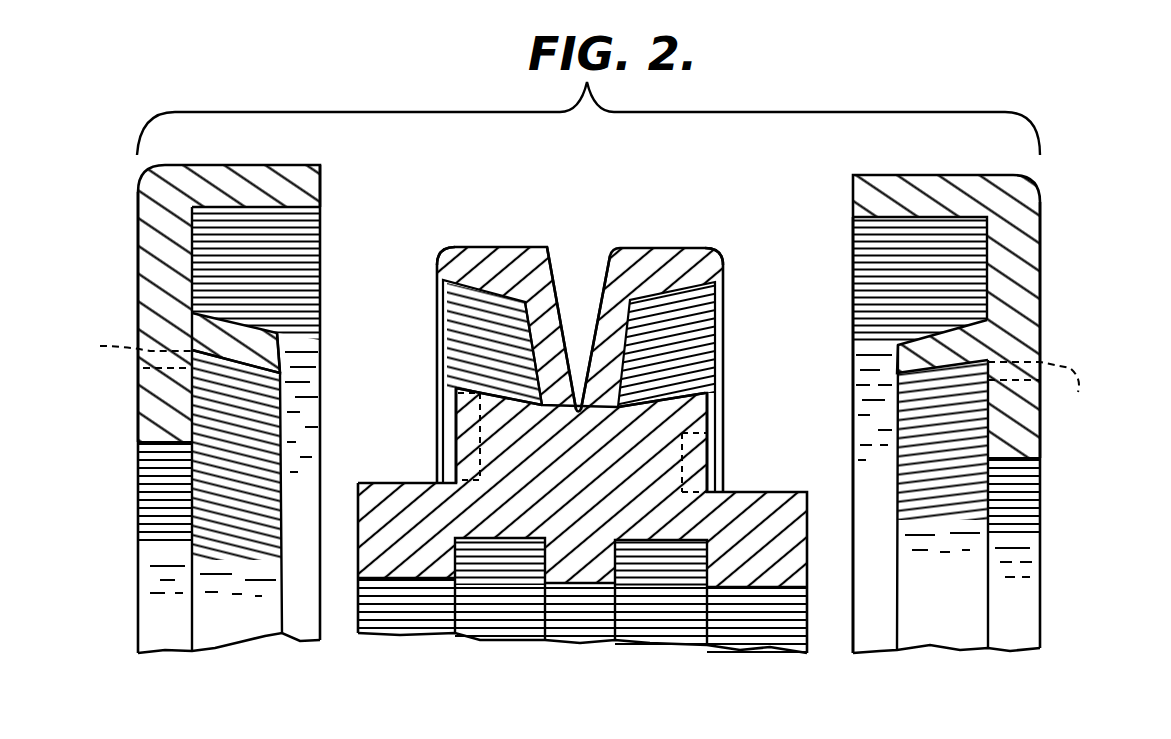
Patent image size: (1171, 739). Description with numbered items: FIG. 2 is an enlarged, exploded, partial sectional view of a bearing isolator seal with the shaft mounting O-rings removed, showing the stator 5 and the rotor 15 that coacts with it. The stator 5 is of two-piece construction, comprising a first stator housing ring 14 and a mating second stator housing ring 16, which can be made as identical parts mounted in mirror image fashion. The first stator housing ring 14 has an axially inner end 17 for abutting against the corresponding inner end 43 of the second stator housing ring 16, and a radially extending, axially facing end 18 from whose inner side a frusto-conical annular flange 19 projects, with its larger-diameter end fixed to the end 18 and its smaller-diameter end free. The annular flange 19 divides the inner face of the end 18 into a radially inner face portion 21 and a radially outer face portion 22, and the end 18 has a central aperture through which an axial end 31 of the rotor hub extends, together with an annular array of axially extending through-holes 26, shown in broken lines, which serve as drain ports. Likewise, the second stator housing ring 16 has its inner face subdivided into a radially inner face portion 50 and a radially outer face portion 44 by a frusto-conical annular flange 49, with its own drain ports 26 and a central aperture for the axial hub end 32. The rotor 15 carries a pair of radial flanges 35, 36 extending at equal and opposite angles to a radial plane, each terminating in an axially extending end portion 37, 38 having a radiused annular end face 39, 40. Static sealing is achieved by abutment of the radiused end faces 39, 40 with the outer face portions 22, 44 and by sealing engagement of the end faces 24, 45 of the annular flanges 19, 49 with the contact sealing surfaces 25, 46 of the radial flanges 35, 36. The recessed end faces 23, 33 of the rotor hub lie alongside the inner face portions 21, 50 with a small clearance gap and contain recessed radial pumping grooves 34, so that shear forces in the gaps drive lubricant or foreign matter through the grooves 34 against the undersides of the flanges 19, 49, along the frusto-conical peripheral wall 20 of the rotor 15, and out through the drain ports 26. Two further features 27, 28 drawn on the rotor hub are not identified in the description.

The stator 5 is at (104, 193).
The first stator housing ring 14 is at (160, 190).
The rotor 15 is at (630, 449).
The second stator housing ring 16 is at (1013, 238).
The axially inner end 17 is at (325, 178).
The radially extending, axially facing end 18 is at (136, 237).
The annular flange 19 is at (228, 320).
The frusto-conical peripheral wall 20 is at (478, 383).
The radially inner face portion 21 is at (214, 424).
The radially outer face portion 22 is at (217, 278).
The recessed end face 23 is at (462, 447).
The end face 24 is at (283, 366).
The contact sealing surface 25 is at (532, 358).
The through-holes 26 is at (589, 365).
The recess 27 is at (518, 572).
The recess 28 is at (668, 585).
The axial end 31 is at (356, 568).
The axial hub end 32 is at (808, 560).
The recessed end face 33 is at (708, 470).
The recessed radial pumping grooves 34 is at (480, 425).
The radial flange 35 is at (541, 303).
The radial flange 36 is at (615, 337).
The axially extending end portion 37 is at (514, 229).
The axially extending end portion 38 is at (658, 248).
The radiused annular end face 39 is at (434, 262).
The radiused annular end face 40 is at (725, 262).
The inner end 43 is at (850, 188).
The radially outer face portion 44 is at (975, 310).
The end face 45 is at (851, 357).
The contact sealing surface 46 is at (621, 378).
The frusto-conical annular flange 49 is at (952, 353).
The radially inner face portion 50 is at (975, 417).